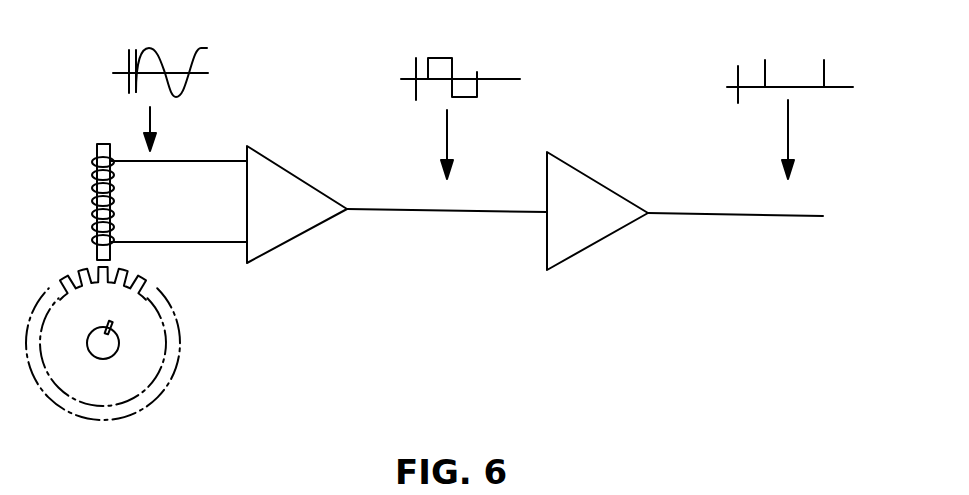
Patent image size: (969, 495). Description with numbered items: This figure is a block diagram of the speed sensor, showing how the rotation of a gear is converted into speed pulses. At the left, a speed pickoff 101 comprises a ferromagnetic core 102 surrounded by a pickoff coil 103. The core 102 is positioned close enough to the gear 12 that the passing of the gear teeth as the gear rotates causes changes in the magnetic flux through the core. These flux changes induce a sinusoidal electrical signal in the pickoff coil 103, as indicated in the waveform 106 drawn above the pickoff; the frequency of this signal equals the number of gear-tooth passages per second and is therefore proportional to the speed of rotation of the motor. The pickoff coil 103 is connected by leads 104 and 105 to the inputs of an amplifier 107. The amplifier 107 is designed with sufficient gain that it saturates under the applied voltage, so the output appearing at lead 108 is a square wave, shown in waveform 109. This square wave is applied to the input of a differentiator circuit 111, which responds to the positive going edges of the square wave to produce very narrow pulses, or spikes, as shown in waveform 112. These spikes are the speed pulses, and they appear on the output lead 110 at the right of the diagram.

The gear 12 is at (165, 312).
The speed pickoff 101 is at (69, 190).
The ferromagnetic core 102 is at (106, 143).
The pickoff coil 103 is at (92, 210).
The lead 104 is at (216, 164).
The lead 105 is at (212, 241).
The waveform 106 is at (157, 50).
The amplifier 107 is at (301, 181).
The lead 108 is at (447, 208).
The waveform 109 is at (448, 57).
The lead 110 is at (752, 215).
The differentiator circuit 111 is at (607, 184).
The waveform 112 is at (775, 53).